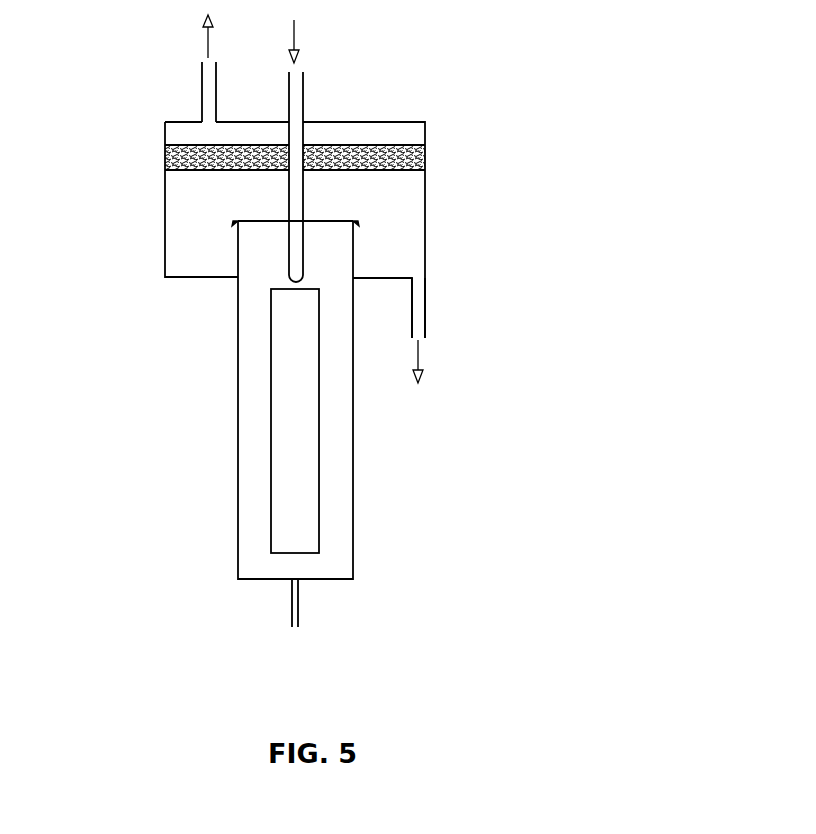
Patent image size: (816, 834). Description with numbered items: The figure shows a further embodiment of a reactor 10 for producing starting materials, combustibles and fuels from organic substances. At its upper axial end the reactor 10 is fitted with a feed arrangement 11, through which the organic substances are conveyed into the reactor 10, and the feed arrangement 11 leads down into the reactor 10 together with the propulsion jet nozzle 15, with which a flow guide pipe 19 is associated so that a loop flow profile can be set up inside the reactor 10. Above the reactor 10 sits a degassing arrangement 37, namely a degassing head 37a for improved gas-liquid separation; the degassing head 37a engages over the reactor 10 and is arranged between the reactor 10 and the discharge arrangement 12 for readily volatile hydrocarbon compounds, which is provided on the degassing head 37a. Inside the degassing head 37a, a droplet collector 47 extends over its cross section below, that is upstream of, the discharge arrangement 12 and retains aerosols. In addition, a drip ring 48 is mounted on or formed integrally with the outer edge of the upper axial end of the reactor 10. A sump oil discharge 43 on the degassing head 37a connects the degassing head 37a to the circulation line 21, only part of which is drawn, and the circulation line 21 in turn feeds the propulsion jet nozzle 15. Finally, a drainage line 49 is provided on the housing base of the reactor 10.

The reactor 10 is at (238, 325).
The feed arrangement 11 is at (338, 151).
The discharge arrangement 12 is at (202, 88).
The propulsion jet nozzle 15 is at (305, 90).
The flow guide pipe 19 is at (272, 437).
The circulation line 21 is at (420, 322).
The degassing arrangement 37 is at (238, 230).
The degassing head 37a is at (165, 195).
The sump oil discharge 43 is at (420, 278).
The droplet collector 47 is at (426, 155).
The drip ring 48 is at (353, 222).
The drainage line 49 is at (300, 605).